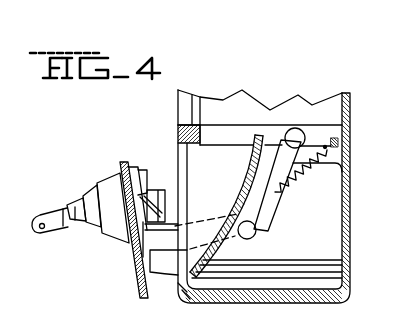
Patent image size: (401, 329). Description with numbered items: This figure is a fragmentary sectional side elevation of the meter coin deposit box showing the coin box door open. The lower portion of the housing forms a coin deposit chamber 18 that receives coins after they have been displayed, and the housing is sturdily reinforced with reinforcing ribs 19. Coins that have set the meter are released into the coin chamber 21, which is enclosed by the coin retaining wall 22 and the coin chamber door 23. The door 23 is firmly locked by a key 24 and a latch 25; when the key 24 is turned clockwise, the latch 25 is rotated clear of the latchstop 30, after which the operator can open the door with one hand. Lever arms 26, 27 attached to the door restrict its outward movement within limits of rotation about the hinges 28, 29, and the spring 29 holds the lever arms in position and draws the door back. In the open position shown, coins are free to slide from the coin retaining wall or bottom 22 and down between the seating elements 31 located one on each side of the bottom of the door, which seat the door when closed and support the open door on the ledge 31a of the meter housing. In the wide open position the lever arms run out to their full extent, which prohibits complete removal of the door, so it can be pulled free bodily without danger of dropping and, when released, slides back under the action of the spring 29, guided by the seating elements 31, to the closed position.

The coin deposit chamber 18 is at (208, 82).
The reinforcing ribs 19 is at (280, 268).
The coin chamber 21 is at (212, 173).
The coin retaining wall 22 is at (240, 220).
The coin chamber door 23 is at (135, 278).
The key 24 is at (58, 226).
The latch 25 is at (147, 172).
The lever arm 26 is at (191, 231).
The lever arm 27 is at (268, 203).
The hinge 28 is at (254, 233).
The spring 29 is at (295, 138).
The latchstop 30 is at (208, 125).
The seating elements 31 is at (162, 280).
The ledge 31a is at (188, 300).